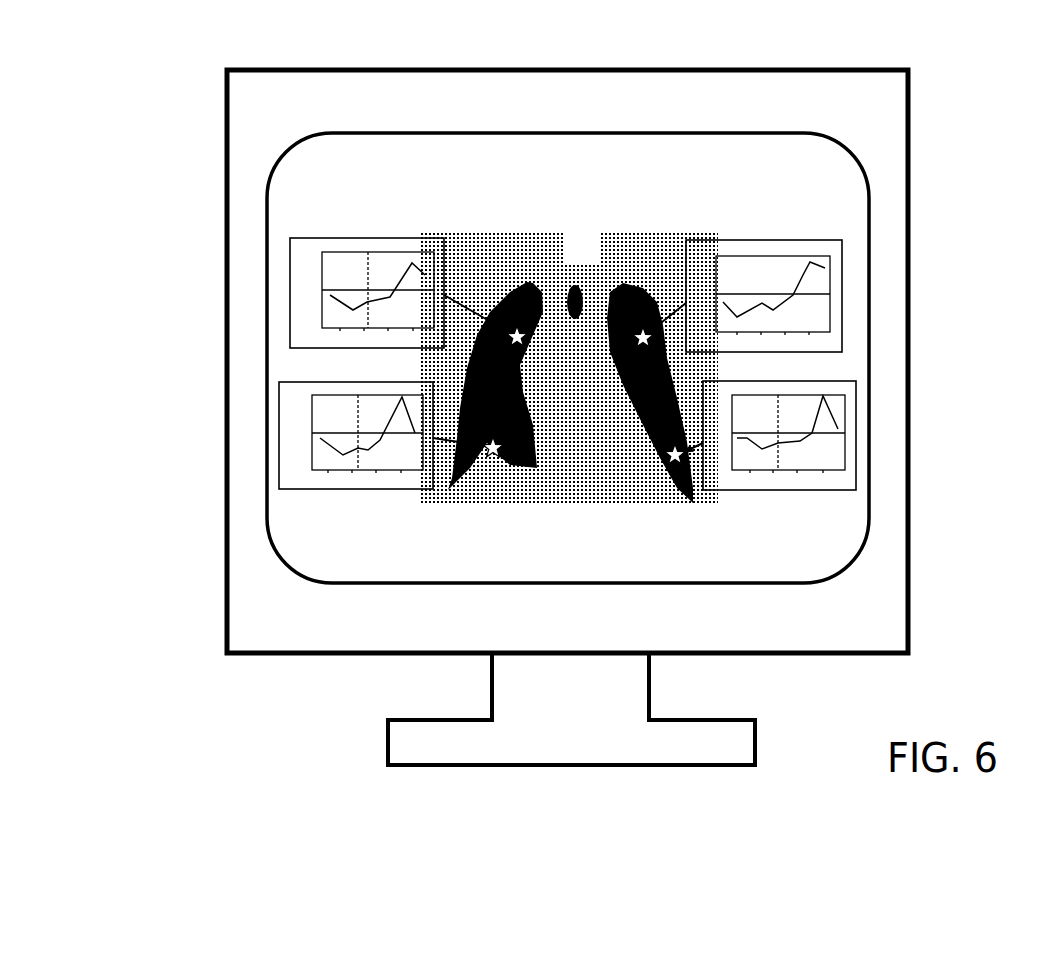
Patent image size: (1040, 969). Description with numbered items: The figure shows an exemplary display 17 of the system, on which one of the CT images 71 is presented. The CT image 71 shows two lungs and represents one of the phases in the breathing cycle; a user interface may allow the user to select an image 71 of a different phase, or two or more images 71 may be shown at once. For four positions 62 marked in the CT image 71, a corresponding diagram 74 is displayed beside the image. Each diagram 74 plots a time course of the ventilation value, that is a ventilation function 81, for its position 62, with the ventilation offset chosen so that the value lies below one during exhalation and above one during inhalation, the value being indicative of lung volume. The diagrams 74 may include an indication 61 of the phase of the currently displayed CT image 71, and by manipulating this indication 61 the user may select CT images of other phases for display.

The display 17 is at (908, 571).
The indication 61 is at (372, 272).
The positions 62 is at (632, 272).
The CT image 71 is at (565, 256).
The diagram 74 is at (290, 268).
The ventilation function 81 is at (803, 276).